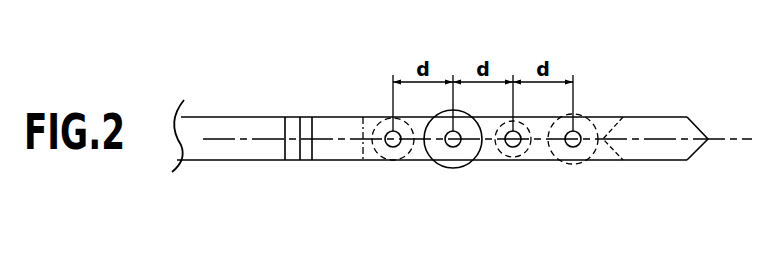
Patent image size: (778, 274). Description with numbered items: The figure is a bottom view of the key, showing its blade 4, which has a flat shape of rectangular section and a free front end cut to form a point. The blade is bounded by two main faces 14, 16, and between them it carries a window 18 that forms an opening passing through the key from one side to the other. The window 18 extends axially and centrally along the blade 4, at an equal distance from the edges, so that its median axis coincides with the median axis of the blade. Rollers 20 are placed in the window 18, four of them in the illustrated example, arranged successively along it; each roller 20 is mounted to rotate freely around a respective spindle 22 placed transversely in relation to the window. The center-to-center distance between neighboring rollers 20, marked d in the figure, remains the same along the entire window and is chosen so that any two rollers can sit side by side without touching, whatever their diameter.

The blade 4 is at (675, 132).
The main face 14 is at (346, 117).
The main face 16 is at (346, 161).
The window 18 is at (370, 162).
The roller 20 is at (456, 168).
The spindle 22 is at (573, 148).